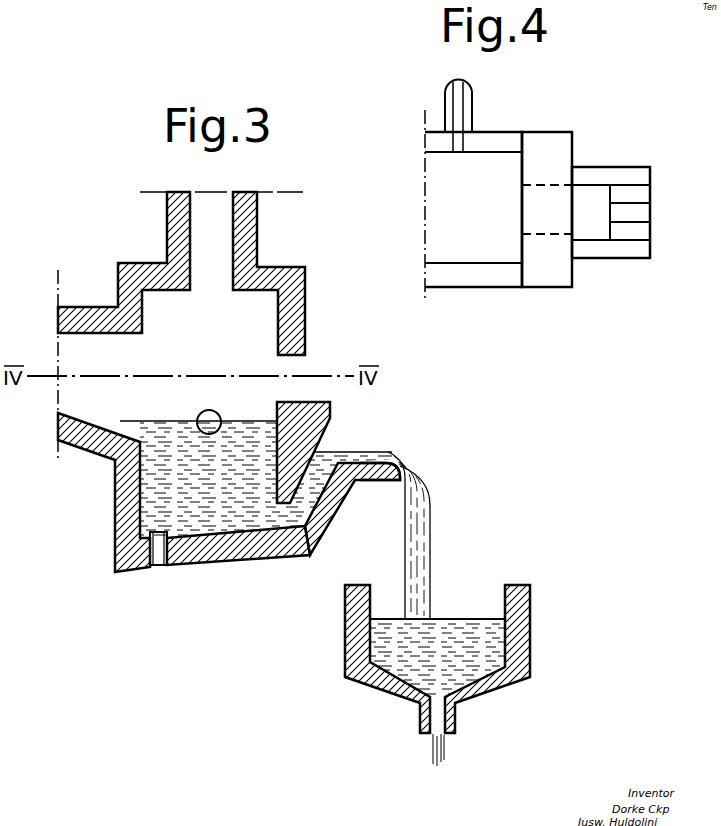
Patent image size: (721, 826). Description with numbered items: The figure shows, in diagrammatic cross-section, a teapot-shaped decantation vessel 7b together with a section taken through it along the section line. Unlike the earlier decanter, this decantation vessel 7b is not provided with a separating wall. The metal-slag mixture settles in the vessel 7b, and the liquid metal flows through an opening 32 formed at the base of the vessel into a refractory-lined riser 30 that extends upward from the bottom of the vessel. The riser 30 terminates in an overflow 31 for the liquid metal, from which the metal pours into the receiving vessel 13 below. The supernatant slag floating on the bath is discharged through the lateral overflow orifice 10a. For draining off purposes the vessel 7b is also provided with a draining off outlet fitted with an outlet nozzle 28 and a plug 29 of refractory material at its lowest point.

In FIG. 3, the decantation vessel 7b is at (270, 318).
In FIG. 4, the decantation vessel 7b is at (470, 255).
In FIG. 3, the overflow orifice 10a is at (214, 411).
In FIG. 4, the overflow orifice 10a is at (466, 103).
In FIG. 3, the vessel 13 is at (376, 690).
In FIG. 3, the outlet nozzle 28 is at (134, 572).
In FIG. 3, the plug 29 is at (160, 566).
In FIG. 3, the riser 30 is at (310, 505).
In FIG. 4, the riser 30 is at (596, 230).
In FIG. 3, the overflow 31 is at (376, 482).
In FIG. 4, the overflow 31 is at (637, 213).
In FIG. 3, the opening 32 is at (262, 521).
In FIG. 4, the opening 32 is at (553, 220).